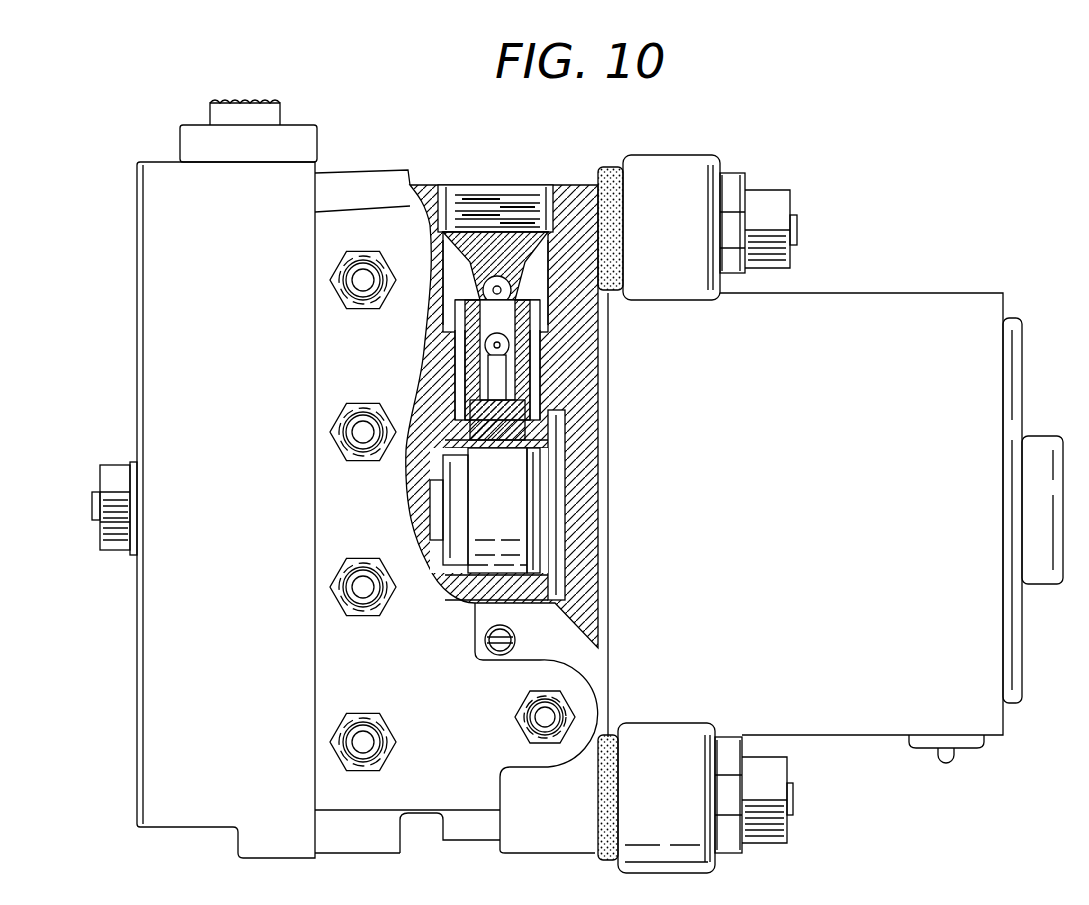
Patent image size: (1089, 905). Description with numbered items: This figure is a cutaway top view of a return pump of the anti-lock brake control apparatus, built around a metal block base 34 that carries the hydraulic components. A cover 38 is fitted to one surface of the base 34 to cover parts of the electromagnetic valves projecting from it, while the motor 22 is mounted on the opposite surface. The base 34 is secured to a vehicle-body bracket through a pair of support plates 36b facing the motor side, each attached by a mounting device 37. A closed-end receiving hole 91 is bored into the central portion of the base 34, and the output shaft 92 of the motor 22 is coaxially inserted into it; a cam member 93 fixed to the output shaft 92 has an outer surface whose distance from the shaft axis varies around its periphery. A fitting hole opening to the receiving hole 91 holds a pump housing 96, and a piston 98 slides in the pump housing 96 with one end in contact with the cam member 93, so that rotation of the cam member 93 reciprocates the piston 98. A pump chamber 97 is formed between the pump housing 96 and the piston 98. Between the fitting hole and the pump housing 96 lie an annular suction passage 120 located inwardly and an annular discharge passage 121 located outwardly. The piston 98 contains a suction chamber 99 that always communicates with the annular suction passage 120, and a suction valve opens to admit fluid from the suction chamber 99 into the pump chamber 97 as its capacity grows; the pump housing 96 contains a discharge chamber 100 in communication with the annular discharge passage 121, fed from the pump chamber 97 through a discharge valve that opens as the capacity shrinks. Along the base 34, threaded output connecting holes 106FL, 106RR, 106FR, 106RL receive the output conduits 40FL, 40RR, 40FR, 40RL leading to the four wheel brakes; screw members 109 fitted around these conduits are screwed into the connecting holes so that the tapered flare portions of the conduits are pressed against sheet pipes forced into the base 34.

The motor 22 is at (823, 508).
The base 34 is at (437, 800).
The mounting device 37 is at (108, 458).
The cover 38 is at (147, 575).
The support plate 36b is at (733, 272).
The output conduit 40FL is at (338, 262).
The output conduit 40RR is at (340, 448).
The output conduit 40FR is at (345, 590).
The output conduit 40RL is at (345, 733).
The output connecting hole 106FL is at (348, 304).
The output connecting hole 106RR is at (340, 412).
The output connecting hole 106FR is at (340, 563).
The output connecting hole 106RL is at (345, 720).
The screw member 109 is at (347, 300).
The discharge chamber 100 is at (432, 240).
The pump chamber 97 is at (448, 322).
The pump housing 96 is at (555, 312).
The piston 98 is at (548, 388).
The suction chamber 99 is at (440, 378).
The annular discharge passage 121 is at (395, 318).
The annular suction passage 120 is at (412, 432).
The receiving hole 91 is at (560, 455).
The output shaft 92 is at (548, 506).
The cam member 93 is at (477, 505).